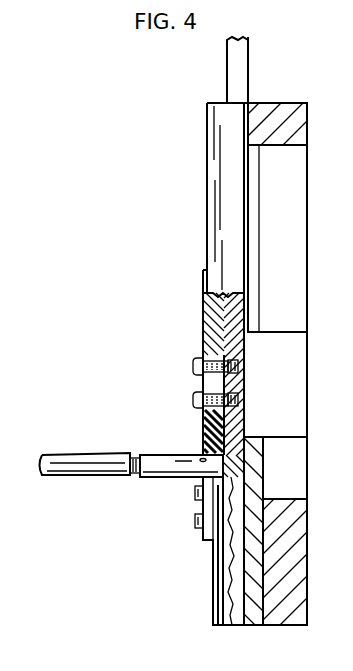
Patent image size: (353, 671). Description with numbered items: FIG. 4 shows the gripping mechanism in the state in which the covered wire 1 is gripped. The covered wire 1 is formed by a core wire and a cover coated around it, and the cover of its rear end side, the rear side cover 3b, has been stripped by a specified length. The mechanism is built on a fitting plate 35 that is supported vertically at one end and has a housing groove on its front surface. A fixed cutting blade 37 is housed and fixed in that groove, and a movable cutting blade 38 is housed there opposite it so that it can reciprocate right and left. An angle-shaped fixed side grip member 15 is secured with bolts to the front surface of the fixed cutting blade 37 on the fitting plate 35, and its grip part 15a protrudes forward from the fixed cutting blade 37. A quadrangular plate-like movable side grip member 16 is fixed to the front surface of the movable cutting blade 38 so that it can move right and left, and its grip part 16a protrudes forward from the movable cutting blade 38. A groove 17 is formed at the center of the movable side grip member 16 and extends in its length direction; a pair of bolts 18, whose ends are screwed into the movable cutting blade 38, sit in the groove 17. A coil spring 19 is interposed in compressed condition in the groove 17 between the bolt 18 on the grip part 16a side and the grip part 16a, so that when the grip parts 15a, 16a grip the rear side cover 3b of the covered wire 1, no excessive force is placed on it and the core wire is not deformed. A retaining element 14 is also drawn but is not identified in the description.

The covered wire 1 is at (62, 454).
The rear side cover 3b is at (143, 455).
The retaining ring 14 is at (203, 283).
The fixed side grip member 15 is at (195, 517).
The grip part 15a is at (200, 479).
The movable side grip member 16 is at (203, 300).
The grip part 16a is at (199, 453).
The groove 17 is at (213, 382).
The bolts 18 is at (193, 398).
The coil spring 19 is at (233, 427).
The fitting plate 35 is at (304, 548).
The fixed cutting blade 37 is at (255, 478).
The movable cutting blade 38 is at (237, 366).